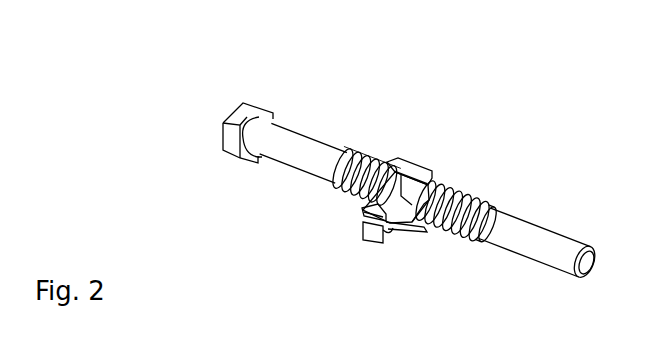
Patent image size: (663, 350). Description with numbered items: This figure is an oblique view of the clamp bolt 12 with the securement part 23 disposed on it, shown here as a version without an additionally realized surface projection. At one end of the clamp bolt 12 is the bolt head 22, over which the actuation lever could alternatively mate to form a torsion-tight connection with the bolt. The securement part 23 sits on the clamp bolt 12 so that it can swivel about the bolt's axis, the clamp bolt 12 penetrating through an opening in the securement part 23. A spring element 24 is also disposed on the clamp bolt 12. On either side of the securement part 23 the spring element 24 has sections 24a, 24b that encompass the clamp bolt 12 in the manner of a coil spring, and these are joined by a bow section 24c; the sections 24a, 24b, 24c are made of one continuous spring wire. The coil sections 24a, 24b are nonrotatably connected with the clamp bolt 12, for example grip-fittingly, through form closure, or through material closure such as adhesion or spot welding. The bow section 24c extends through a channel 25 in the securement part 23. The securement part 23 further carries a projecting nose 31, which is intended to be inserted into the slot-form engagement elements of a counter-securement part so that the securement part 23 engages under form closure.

The clamp bolt 12 is at (312, 145).
The bolt head 22 is at (240, 115).
The securement part 23 is at (402, 195).
The spring element 24 is at (363, 153).
The section of spring element 24a is at (450, 233).
The section of spring element 24b is at (343, 183).
The bow section 24c is at (410, 232).
The channel 25 is at (362, 216).
The projecting nose 31 is at (372, 233).